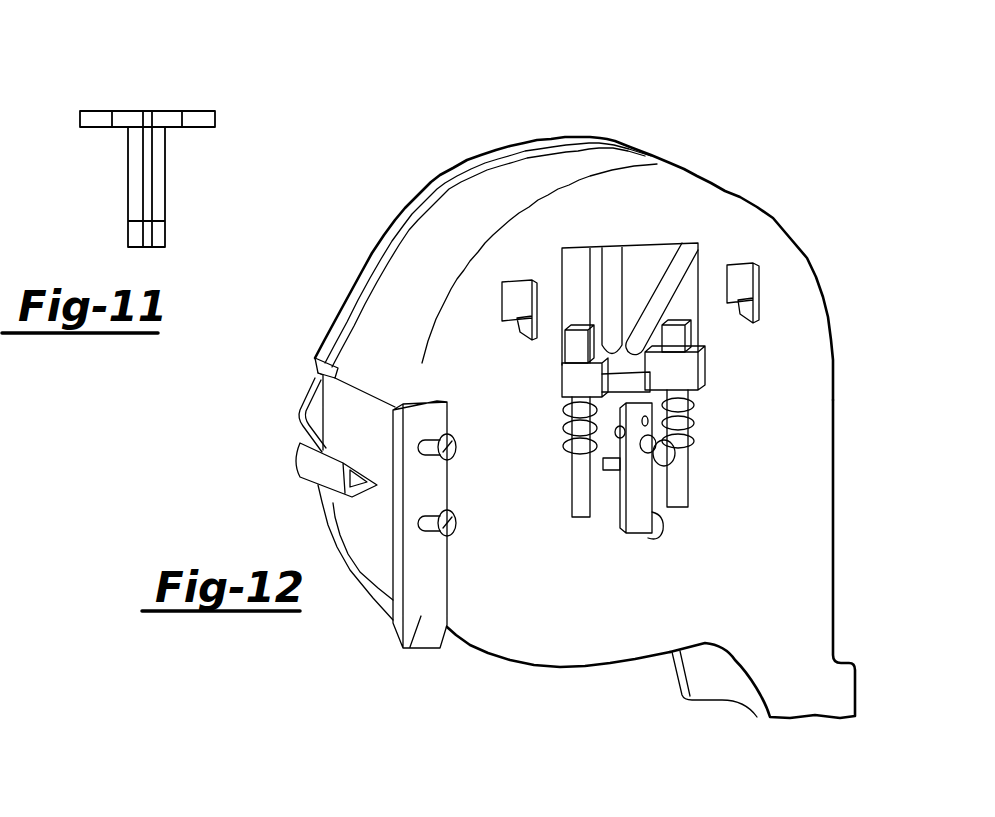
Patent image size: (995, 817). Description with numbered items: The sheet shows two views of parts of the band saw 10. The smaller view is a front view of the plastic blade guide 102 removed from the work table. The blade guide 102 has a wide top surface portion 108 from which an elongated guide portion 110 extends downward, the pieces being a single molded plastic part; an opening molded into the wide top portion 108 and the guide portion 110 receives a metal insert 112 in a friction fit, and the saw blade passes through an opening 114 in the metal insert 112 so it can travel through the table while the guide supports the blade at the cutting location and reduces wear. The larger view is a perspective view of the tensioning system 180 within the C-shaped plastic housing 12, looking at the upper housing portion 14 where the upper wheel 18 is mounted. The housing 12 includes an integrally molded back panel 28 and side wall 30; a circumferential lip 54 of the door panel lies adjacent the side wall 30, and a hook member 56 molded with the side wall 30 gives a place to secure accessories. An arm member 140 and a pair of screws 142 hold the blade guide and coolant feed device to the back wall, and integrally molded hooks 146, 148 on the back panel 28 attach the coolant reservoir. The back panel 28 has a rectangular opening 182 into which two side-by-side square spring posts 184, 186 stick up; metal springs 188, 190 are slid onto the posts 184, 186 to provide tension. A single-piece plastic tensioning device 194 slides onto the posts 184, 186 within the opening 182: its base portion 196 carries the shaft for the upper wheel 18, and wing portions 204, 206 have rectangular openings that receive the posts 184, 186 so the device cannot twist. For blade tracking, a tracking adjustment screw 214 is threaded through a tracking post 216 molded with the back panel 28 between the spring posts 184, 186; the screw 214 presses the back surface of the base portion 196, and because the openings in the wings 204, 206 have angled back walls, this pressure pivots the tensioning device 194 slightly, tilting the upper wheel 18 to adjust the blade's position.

In FIG. 11, the blade guide 102 is at (195, 88).
In FIG. 11, the wide top surface portion 108 is at (90, 112).
In FIG. 11, the elongated guide portion 110 is at (158, 200).
In FIG. 11, the metal insert 112 is at (132, 118).
In FIG. 11, the opening 114 is at (143, 193).
In FIG. 12, the band saw 10 is at (550, 100).
In FIG. 12, the housing 12 is at (774, 211).
In FIG. 12, the upper housing portion 14 is at (813, 455).
In FIG. 12, the upper wheel 18 is at (610, 265).
In FIG. 12, the back panel 28 is at (615, 187).
In FIG. 12, the side wall 30 is at (455, 210).
In FIG. 12, the circumferential lip 54 is at (362, 283).
In FIG. 12, the hook member 56 is at (297, 480).
In FIG. 12, the arm member 140 is at (408, 648).
In FIG. 12, the screws 142 is at (460, 512).
In FIG. 12, the hook 146 is at (530, 322).
In FIG. 12, the hook 148 is at (764, 308).
In FIG. 12, the tensioning system 180 is at (552, 485).
In FIG. 12, the rectangular opening 182 is at (668, 255).
In FIG. 12, the spring post 184 is at (580, 362).
In FIG. 12, the spring post 186 is at (688, 338).
In FIG. 12, the spring 188 is at (598, 505).
In FIG. 12, the spring 190 is at (676, 440).
In FIG. 12, the tensioning device 194 is at (640, 535).
In FIG. 12, the base portion 196 is at (694, 398).
In FIG. 12, the wing portion 204 is at (557, 470).
In FIG. 12, the wing portion 206 is at (698, 372).
In FIG. 12, the tracking adjustment screw 214 is at (668, 466).
In FIG. 12, the tracking post 216 is at (655, 540).